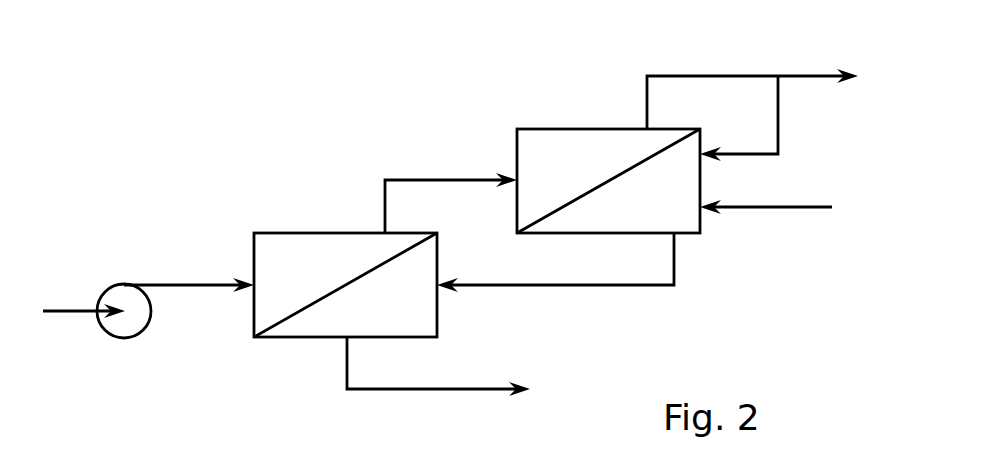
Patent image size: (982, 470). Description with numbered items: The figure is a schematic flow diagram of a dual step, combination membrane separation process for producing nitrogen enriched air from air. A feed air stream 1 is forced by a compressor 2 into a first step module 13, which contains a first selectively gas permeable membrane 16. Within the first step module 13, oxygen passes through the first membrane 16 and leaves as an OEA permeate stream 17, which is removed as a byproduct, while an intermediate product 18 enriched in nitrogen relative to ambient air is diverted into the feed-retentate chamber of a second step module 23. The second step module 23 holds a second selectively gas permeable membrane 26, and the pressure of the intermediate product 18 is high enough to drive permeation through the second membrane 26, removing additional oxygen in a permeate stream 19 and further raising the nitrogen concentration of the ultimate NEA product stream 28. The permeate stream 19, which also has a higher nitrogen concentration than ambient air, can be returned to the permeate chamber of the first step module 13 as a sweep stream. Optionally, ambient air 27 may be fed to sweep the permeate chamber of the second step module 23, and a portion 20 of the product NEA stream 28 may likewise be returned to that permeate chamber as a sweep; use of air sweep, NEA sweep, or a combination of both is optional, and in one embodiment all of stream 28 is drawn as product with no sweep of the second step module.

The feed air stream 1 is at (65, 310).
The compressor 2 is at (123, 338).
The first step module 13 is at (283, 233).
The first selectively gas permeable membrane 16 is at (283, 322).
The OEA permeate stream 17 is at (447, 389).
The intermediate product 18 is at (405, 180).
The permeate stream 19 is at (519, 285).
The portion of product NEA stream 20 is at (780, 128).
The second step module 23 is at (545, 129).
The second selectively gas permeable membrane 26 is at (638, 158).
The ambient air 27 is at (777, 207).
The ultimate NEA product stream 28 is at (800, 76).